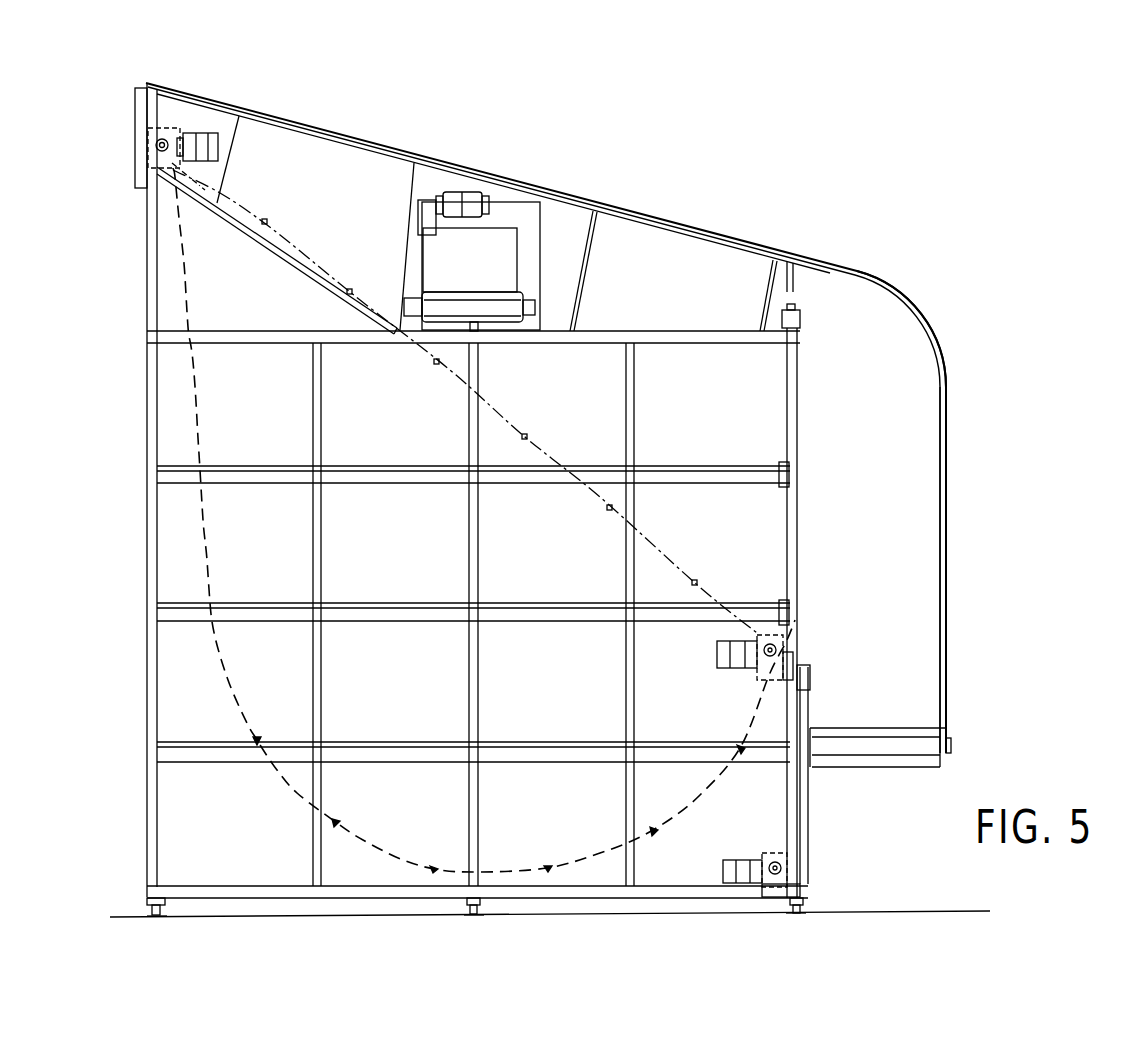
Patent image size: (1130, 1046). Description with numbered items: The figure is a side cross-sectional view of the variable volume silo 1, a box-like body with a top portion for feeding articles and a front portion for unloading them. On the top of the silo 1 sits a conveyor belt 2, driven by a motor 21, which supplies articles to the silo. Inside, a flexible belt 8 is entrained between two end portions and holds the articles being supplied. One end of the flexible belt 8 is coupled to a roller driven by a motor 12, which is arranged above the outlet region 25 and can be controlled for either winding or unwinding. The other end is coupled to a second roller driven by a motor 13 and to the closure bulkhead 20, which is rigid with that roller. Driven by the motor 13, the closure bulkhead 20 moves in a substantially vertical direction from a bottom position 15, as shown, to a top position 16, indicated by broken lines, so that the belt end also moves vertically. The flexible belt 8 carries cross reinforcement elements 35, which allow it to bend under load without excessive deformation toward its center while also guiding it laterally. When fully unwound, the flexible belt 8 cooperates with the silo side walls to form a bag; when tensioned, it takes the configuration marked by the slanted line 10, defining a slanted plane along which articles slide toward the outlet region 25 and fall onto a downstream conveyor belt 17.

The variable volume silo 1 is at (100, 266).
The conveyor belt 2 is at (483, 293).
The flexible belt 8 is at (200, 530).
The slanted line 10 is at (547, 450).
The motor 12 is at (150, 157).
The motor 13 is at (785, 638).
The bottom position 15 is at (800, 687).
The top position 16 is at (800, 455).
The conveyor belt 17 is at (900, 750).
The closure bulkhead 20 is at (802, 795).
The motor 21 is at (458, 192).
The outlet region 25 is at (800, 540).
The cross reinforcement elements 35 is at (333, 823).